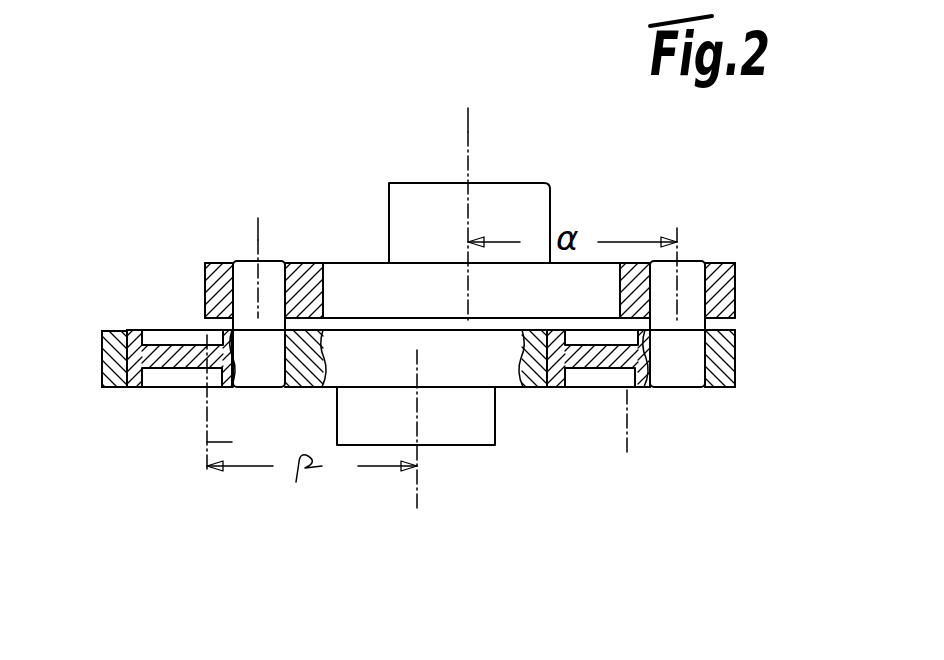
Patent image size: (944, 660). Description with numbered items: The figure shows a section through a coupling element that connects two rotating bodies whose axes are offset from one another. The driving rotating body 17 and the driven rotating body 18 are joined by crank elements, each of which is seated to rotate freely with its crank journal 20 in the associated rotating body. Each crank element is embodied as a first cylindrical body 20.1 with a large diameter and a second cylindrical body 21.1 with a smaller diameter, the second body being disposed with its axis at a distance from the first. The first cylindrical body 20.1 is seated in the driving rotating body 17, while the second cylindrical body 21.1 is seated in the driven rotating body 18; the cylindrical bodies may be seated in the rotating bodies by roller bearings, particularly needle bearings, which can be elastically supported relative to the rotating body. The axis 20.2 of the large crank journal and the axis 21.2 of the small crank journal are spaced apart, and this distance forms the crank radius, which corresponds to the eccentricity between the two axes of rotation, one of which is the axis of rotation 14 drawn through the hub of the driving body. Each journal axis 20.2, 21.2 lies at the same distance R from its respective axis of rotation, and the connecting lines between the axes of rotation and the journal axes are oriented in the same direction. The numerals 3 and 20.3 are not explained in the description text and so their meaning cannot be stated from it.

The shaft boss 3 is at (417, 495).
The axis of rotation 14 is at (470, 122).
The driving rotating body 17 is at (105, 386).
The driven rotating body 18 is at (733, 288).
The crank journal 20 is at (152, 388).
The first cylindrical body 20.1 is at (162, 350).
The axis of the crank journal 20.2 is at (312, 408).
The right support insert 20.3 is at (594, 376).
The second cylindrical body 21.1 is at (245, 275).
The axis of the crank journal 21.2 is at (258, 230).